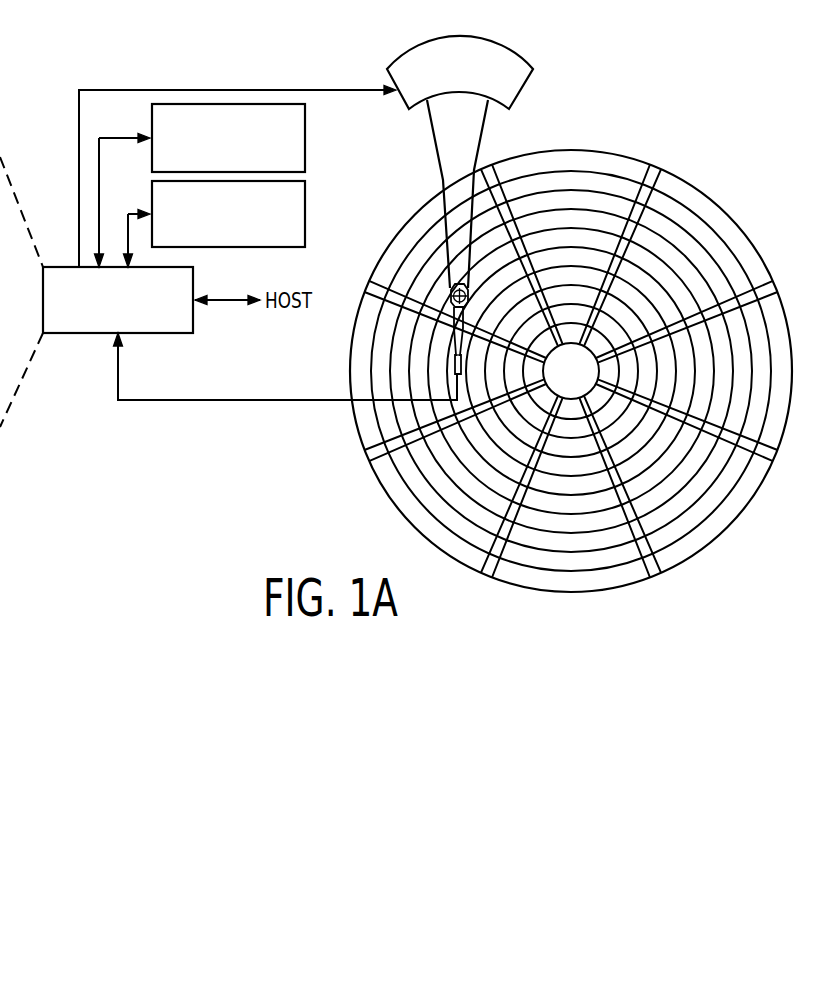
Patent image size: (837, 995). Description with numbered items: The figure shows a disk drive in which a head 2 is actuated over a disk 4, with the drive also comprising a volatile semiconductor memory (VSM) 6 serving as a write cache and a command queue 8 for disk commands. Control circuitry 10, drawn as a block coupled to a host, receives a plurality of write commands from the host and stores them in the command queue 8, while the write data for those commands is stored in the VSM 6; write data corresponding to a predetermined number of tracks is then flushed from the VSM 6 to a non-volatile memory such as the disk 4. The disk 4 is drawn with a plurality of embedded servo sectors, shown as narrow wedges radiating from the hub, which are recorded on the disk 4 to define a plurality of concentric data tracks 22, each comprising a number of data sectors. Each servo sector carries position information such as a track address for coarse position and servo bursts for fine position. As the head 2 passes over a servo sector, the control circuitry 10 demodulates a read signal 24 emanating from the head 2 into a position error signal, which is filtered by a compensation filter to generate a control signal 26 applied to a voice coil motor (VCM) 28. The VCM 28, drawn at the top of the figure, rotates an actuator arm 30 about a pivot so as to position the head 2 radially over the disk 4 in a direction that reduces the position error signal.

The head 2 is at (441, 372).
The disk 4 is at (738, 193).
The volatile semiconductor memory (VSM) 6 is at (306, 138).
The command queue 8 is at (306, 213).
The control circuitry 10 is at (75, 334).
The data tracks 22 is at (569, 181).
The read signal 24 is at (243, 400).
The control signal 26 is at (79, 152).
The voice coil motor (VCM) 28 is at (405, 108).
The actuator arm 30 is at (442, 181).